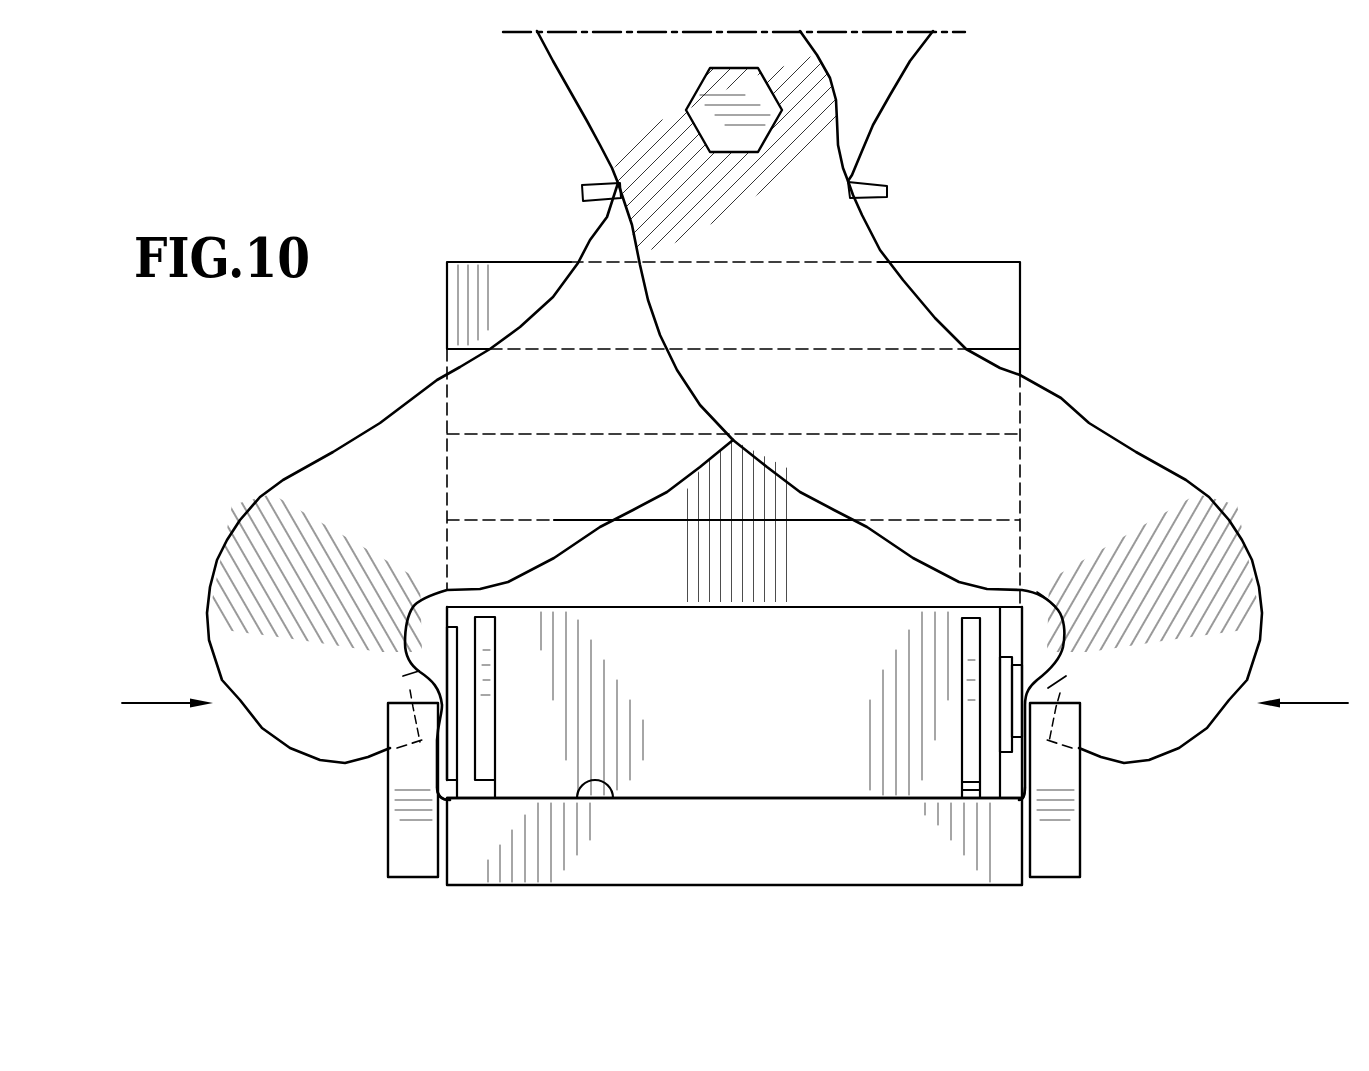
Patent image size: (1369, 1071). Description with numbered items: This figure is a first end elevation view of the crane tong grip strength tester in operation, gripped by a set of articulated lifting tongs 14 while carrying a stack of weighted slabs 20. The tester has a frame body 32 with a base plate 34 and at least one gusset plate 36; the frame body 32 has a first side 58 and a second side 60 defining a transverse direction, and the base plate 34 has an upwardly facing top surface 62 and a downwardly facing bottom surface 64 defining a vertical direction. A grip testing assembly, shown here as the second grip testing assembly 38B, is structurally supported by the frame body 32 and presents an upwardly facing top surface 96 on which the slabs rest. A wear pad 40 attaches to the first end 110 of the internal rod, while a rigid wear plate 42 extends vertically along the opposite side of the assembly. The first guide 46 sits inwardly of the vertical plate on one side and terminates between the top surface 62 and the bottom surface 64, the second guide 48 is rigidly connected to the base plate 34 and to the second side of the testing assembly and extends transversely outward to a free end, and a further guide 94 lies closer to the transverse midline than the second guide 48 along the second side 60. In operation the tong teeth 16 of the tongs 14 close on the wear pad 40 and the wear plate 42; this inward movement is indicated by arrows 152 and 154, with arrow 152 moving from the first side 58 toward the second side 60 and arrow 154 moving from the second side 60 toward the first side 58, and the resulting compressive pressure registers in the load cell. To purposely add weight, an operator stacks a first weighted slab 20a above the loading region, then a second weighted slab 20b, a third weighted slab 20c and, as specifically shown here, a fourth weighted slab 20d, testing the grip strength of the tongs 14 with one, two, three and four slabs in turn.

The articulated lifting tongs 14 is at (300, 445).
The weighted slabs 20 is at (844, 464).
The first weighted slab 20a is at (640, 596).
The second weighted slab 20b is at (1004, 477).
The third weighted slab 20c is at (1012, 362).
The fourth weighted slab 20d is at (1007, 302).
The upwardly facing top surface 96 is at (773, 606).
The base plate 34 is at (605, 860).
The upwardly facing top surface 62 is at (788, 798).
The gusset plate 36 is at (492, 746).
The wear plate 42 is at (440, 757).
The first end of rod 110 is at (1005, 688).
The guide 94 is at (1007, 768).
The wear pad 40 is at (1043, 674).
The tong teeth 16 is at (417, 690).
The first guide 46 is at (402, 852).
The second guide 48 is at (1067, 855).
The first side 58 is at (447, 857).
The second side 60 is at (1027, 857).
The second grip testing assembly 38B is at (727, 760).
The downwardly facing bottom surface 64 is at (837, 887).
The frame body 32 is at (924, 904).
The arrow 152 is at (157, 702).
The arrow 154 is at (1310, 702).